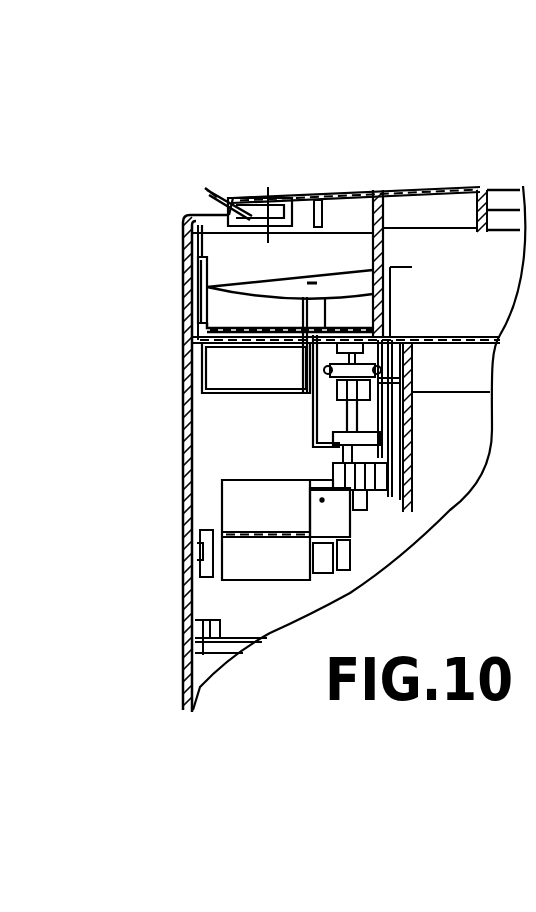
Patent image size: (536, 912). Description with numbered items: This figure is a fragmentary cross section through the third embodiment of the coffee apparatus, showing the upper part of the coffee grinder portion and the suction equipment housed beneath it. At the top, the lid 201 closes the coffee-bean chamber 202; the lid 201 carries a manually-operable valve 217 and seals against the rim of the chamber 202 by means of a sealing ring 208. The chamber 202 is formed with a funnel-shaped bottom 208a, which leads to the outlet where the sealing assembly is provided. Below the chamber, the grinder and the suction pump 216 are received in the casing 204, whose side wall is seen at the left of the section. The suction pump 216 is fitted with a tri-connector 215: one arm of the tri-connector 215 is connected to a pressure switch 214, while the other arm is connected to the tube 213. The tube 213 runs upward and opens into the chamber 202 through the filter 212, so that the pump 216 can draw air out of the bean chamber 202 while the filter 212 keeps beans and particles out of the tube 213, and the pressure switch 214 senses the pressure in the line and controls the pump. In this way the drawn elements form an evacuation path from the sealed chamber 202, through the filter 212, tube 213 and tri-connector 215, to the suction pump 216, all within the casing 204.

The lid 201 is at (198, 222).
The coffee-bean chamber 202 is at (316, 243).
The casing 204 is at (182, 410).
The sealing ring 208 is at (192, 256).
The funnel-shaped bottom 208a is at (353, 270).
The filter 212 is at (201, 262).
The tube 213 is at (216, 323).
The pressure switch 214 is at (340, 372).
The tri-connector 215 is at (340, 455).
The suction pump 216 is at (333, 467).
The manually-operable valve 217 is at (213, 193).